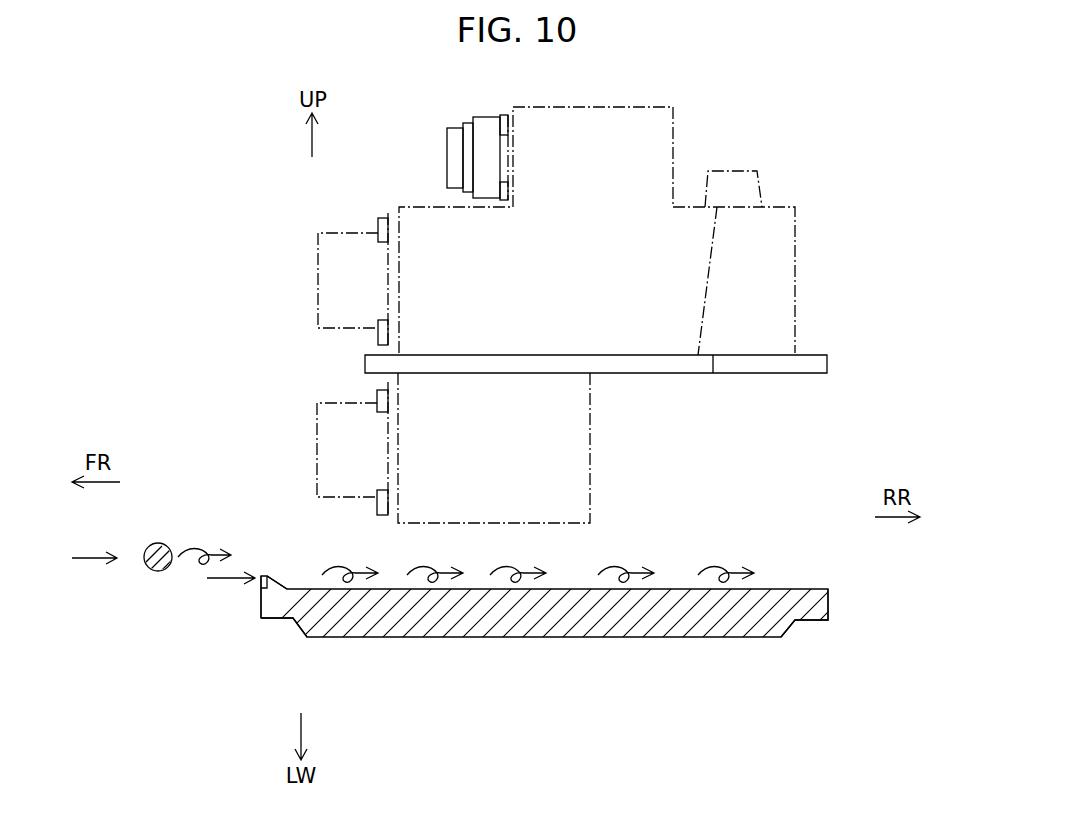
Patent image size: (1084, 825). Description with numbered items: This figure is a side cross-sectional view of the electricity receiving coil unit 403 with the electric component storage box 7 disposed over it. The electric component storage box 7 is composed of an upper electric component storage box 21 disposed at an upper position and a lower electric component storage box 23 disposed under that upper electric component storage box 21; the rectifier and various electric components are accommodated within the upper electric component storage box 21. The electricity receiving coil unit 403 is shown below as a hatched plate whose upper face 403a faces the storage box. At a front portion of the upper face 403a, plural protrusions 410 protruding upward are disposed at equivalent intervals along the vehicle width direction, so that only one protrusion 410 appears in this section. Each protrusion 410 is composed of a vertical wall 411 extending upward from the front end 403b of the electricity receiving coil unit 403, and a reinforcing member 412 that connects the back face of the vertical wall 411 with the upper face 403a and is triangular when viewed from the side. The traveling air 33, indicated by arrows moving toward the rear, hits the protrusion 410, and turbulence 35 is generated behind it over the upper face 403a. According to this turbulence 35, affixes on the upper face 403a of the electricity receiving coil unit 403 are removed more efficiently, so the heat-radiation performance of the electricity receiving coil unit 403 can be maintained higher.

The electric component storage box 7 is at (600, 315).
The upper electric component storage box 21 is at (775, 237).
The lower electric component storage box 23 is at (565, 433).
The traveling air 33 is at (98, 560).
The turbulence 35 is at (202, 549).
The electricity receiving coil unit 403 is at (562, 612).
The upper face 403a is at (826, 590).
The front end 403b is at (261, 608).
The protrusion 410 is at (265, 563).
The vertical wall 411 is at (261, 586).
The reinforcing member 412 is at (270, 585).